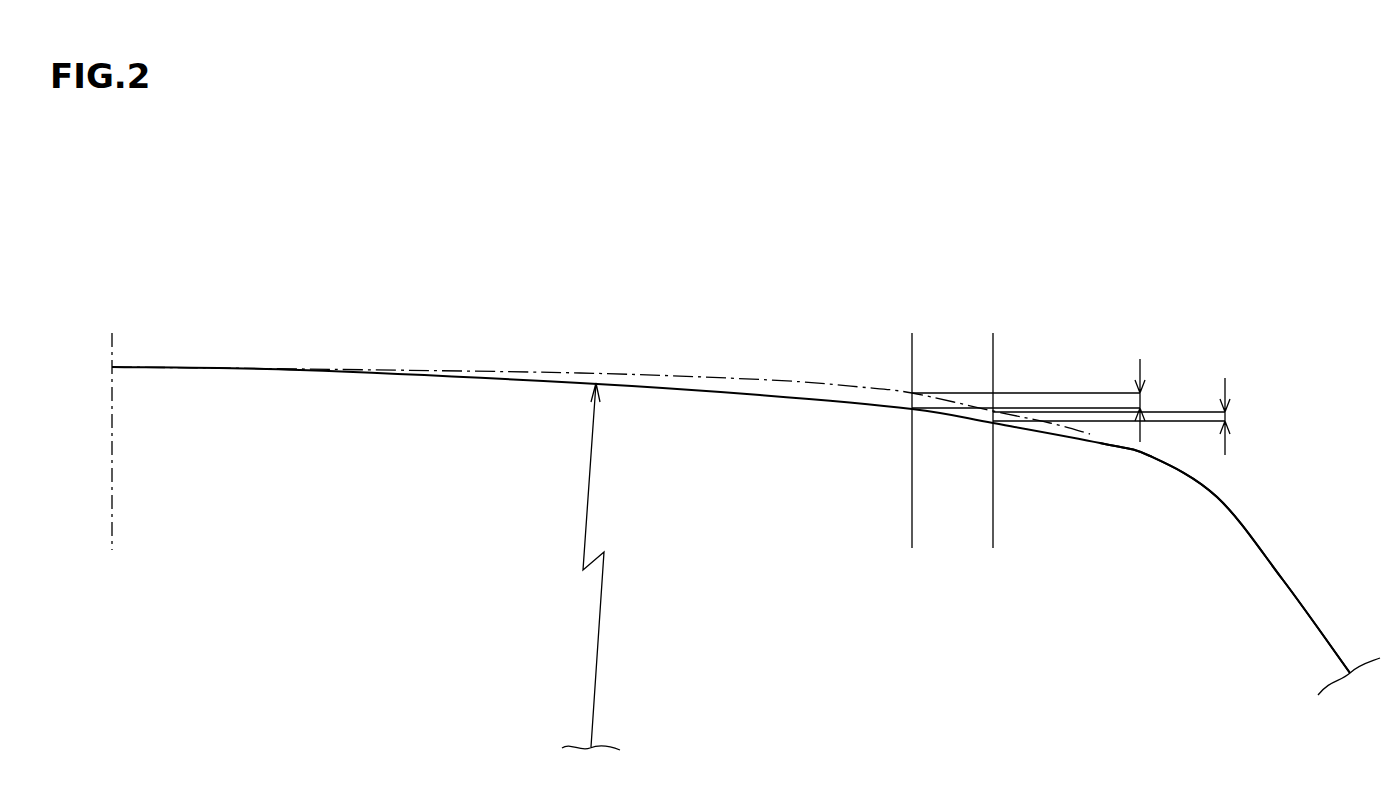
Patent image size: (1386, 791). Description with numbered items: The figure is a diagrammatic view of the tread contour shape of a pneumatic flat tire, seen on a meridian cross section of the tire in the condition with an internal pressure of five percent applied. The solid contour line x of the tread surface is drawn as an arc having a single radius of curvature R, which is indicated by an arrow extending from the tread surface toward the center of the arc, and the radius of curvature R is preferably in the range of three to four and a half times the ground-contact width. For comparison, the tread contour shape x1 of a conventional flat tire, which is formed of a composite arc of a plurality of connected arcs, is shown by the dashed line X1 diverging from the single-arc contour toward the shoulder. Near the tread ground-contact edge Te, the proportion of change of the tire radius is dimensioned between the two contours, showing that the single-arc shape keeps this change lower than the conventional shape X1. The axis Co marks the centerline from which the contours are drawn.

The optical axis / center of lens surface Co is at (112, 430).
The tread contour shape of conventional flat tire X1 is at (775, 380).
The tread ground-contact edge Te is at (1104, 453).
The radius of curvature R is at (600, 637).